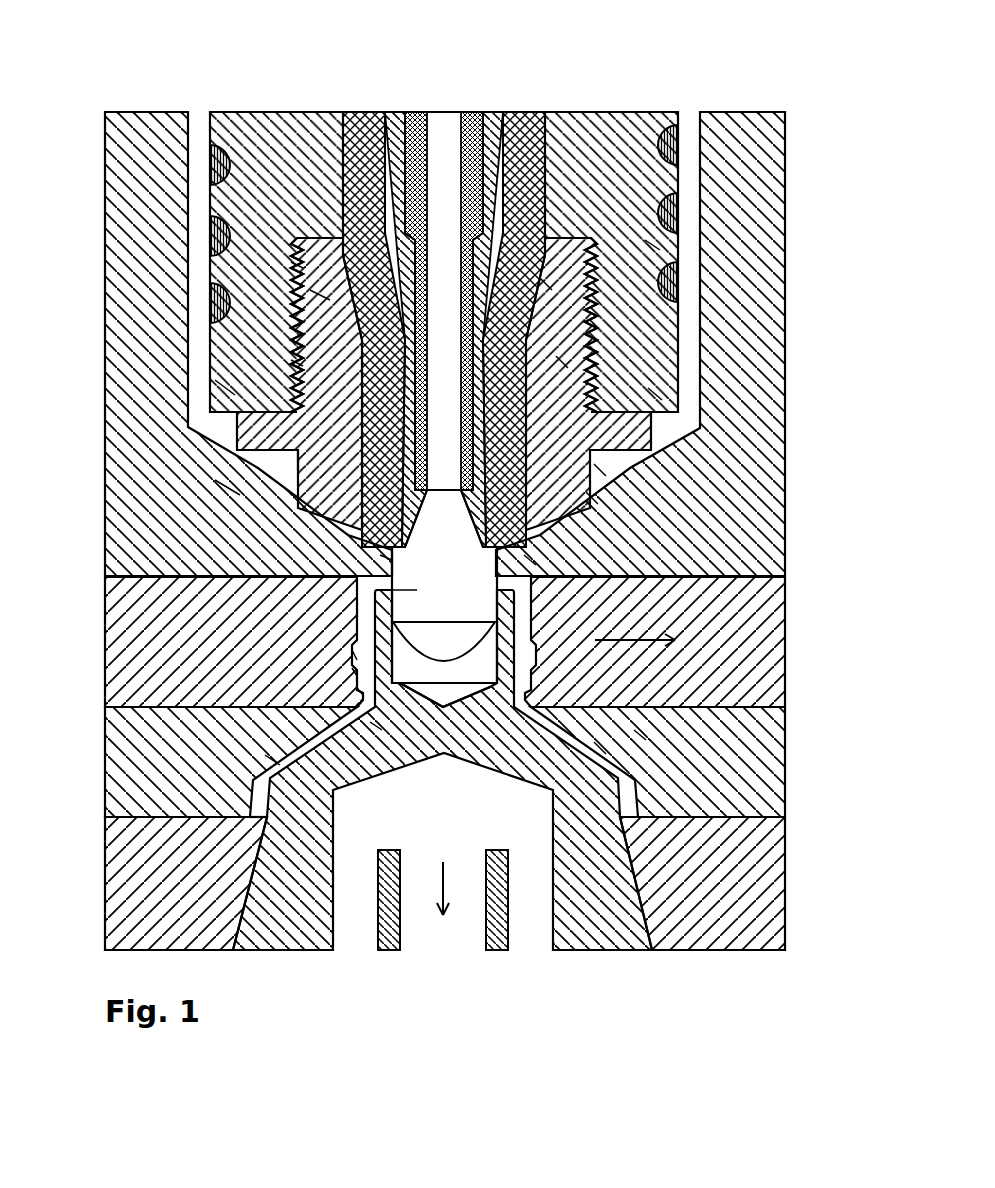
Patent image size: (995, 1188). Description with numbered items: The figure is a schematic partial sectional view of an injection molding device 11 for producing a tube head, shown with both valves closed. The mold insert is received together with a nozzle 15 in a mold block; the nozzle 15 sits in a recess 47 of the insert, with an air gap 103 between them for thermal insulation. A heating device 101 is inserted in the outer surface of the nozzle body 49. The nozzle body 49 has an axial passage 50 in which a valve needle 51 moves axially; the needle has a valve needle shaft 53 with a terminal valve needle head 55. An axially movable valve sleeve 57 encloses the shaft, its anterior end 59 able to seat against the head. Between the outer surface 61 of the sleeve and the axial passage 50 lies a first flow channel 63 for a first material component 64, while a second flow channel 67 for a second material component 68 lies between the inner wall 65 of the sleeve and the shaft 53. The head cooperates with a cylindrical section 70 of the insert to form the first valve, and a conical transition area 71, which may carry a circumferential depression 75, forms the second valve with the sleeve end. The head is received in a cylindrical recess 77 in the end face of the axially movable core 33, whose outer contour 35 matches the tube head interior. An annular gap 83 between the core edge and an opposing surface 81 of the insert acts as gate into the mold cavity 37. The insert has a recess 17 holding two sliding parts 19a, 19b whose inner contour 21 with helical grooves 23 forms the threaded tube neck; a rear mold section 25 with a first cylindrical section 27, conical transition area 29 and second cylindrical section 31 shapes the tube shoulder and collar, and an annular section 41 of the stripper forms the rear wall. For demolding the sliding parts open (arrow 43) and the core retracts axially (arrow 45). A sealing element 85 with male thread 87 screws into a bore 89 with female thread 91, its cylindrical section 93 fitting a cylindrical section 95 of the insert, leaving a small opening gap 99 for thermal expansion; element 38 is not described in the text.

The injection molding device 11 is at (434, 66).
The nozzle 15 is at (588, 108).
The recess 17 is at (330, 583).
The sliding part 19a is at (135, 625).
The sliding part 19b is at (745, 630).
The inner contour 21 is at (352, 690).
The grooves 23 is at (350, 672).
The rear mold section 25 is at (142, 785).
The first cylindrical section 27 is at (640, 797).
The conical transition area 29 is at (600, 748).
The second cylindrical section 31 is at (640, 735).
The core 33 is at (375, 728).
The outer contour 35 is at (272, 760).
The mold cavity 37 is at (612, 745).
The mold plate 38 is at (142, 906).
The annular section 41 is at (262, 824).
The arrow 43 is at (650, 648).
The arrow 45 is at (447, 888).
The recess 47 is at (700, 218).
The nozzle body 49 is at (655, 245).
The axial passage 50 is at (545, 284).
The valve needle 51 is at (486, 106).
The valve needle shaft 53 is at (492, 336).
The valve needle head 55 is at (417, 588).
The valve sleeve 57 is at (401, 147).
The anterior end 59 is at (300, 418).
The outer surface 61 is at (376, 345).
The first flow channel 63 is at (296, 366).
The first material component 64 is at (225, 487).
The inner wall 65 is at (225, 388).
The second flow channel 67 is at (562, 362).
The second material component 68 is at (300, 467).
The cylindrical section 70 is at (530, 560).
The conical transition area 71 is at (417, 513).
The circumferential depression 75 is at (407, 548).
The cylindrical recess 77 is at (350, 655).
The surface 81 is at (500, 577).
The annular gap 83 is at (386, 577).
The sealing element 85 is at (320, 297).
The male thread 87 is at (291, 268).
The bore 89 is at (296, 240).
The female thread 91 is at (655, 395).
The cylindrical section 93 is at (600, 470).
The cylindrical section 95 is at (592, 498).
The opening gap 99 is at (386, 560).
The heating device 101 is at (216, 172).
The air gap 103 is at (196, 152).